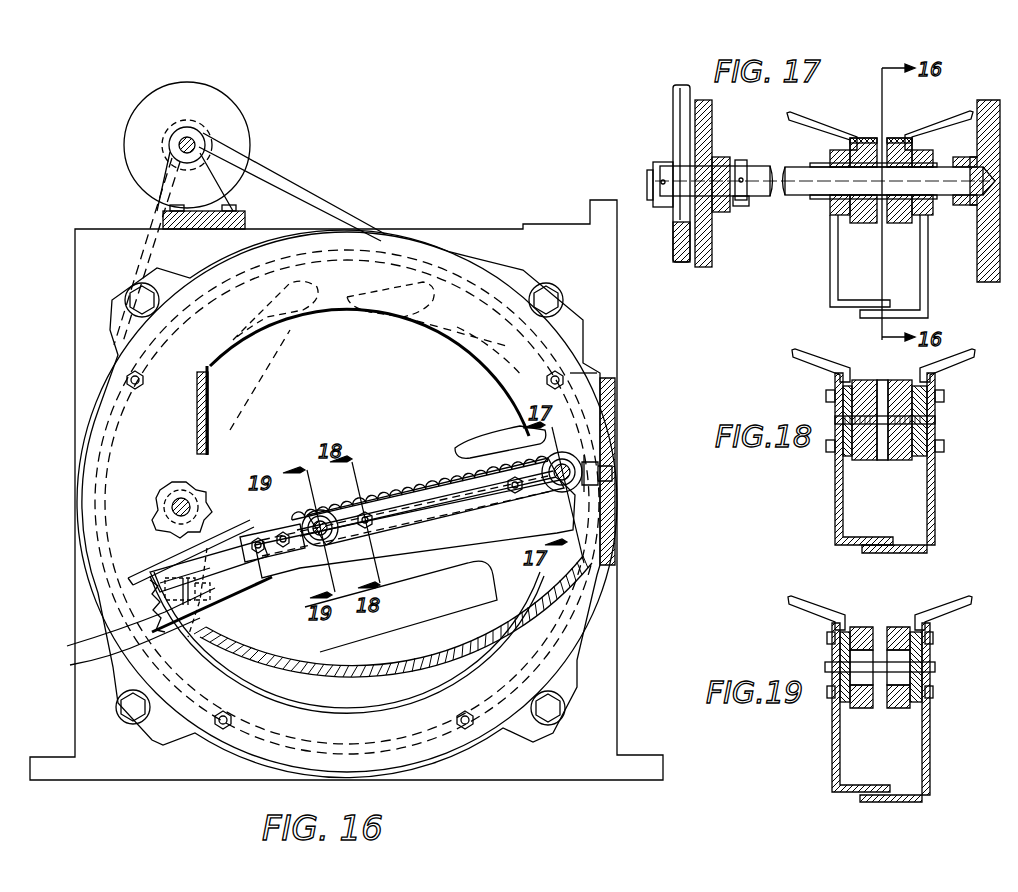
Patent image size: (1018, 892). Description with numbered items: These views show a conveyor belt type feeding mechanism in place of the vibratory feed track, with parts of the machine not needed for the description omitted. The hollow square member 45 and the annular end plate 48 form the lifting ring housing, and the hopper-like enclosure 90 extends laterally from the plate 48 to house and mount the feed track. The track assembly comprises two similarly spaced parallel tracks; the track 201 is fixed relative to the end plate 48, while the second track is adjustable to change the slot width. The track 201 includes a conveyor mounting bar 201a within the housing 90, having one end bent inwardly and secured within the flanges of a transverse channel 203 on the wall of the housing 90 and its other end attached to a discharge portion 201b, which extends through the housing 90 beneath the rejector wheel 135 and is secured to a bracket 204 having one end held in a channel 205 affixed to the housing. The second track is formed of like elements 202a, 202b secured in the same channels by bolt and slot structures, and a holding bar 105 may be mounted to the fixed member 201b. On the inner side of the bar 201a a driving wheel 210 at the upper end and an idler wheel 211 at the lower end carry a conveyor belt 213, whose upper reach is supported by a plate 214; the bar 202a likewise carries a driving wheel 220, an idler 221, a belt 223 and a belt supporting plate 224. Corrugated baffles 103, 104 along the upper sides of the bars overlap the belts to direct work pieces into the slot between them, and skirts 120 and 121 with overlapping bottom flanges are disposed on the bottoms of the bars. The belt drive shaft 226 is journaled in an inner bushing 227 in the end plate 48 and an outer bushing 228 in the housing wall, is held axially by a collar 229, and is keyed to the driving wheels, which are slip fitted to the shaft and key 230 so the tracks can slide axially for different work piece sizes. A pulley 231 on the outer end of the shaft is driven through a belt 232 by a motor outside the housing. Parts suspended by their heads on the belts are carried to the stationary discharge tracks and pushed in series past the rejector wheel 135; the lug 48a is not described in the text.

In FIG. 16, the hollow square member 45 is at (610, 333).
In FIG. 16, the annular end plate 48 is at (600, 373).
In FIG. 17, the annular end plate 48 is at (977, 272).
In FIG. 16, the housing lug 48a is at (500, 440).
In FIG. 16, the hopper-like enclosure 90 is at (612, 515).
In FIG. 17, the hopper-like enclosure 90 is at (712, 250).
In FIG. 16, the corrugated baffle 103 is at (445, 462).
In FIG. 17, the corrugated baffle 103 is at (920, 128).
In FIG. 18, the corrugated baffle 103 is at (958, 362).
In FIG. 17, the corrugated baffle 104 is at (832, 124).
In FIG. 18, the corrugated baffle 104 is at (792, 355).
In FIG. 16, the holding bar 105 is at (162, 565).
In FIG. 17, the skirt 120 is at (928, 314).
In FIG. 18, the skirt 120 is at (935, 514).
In FIG. 17, the skirt 121 is at (830, 278).
In FIG. 18, the skirt 121 is at (835, 514).
In FIG. 16, the kicker wheel 135 is at (173, 485).
In FIG. 16, the track 201 is at (252, 500).
In FIG. 16, the conveyor mounting bar 201a is at (465, 528).
In FIG. 17, the conveyor mounting bar 201a is at (920, 226).
In FIG. 18, the conveyor mounting bar 201a is at (920, 455).
In FIG. 19, the conveyor mounting bar 201a is at (922, 700).
In FIG. 16, the discharge portion 201b is at (117, 621).
In FIG. 17, the conveyor mounting bar 202a is at (838, 226).
In FIG. 18, the conveyor mounting bar 202a is at (845, 462).
In FIG. 19, the conveyor mounting bar 202a is at (843, 710).
In FIG. 16, the discharge portion 202b is at (111, 645).
In FIG. 16, the transverse channel 203 is at (605, 460).
In FIG. 16, the bracket 204 is at (140, 603).
In FIG. 16, the channel 205 is at (190, 622).
In FIG. 17, the driving wheel 210 is at (898, 226).
In FIG. 19, the idler wheel 211 is at (895, 710).
In FIG. 17, the conveyor belt 213 is at (904, 213).
In FIG. 18, the conveyor belt 213 is at (916, 462).
In FIG. 19, the conveyor belt 213 is at (892, 627).
In FIG. 16, the belt supporting plate 214 is at (415, 525).
In FIG. 18, the belt supporting plate 214 is at (882, 462).
In FIG. 17, the driving wheel 220 is at (860, 226).
In FIG. 19, the idler wheel 221 is at (858, 710).
In FIG. 17, the conveyor belt 223 is at (862, 213).
In FIG. 18, the conveyor belt 223 is at (864, 462).
In FIG. 19, the conveyor belt 223 is at (865, 627).
In FIG. 18, the belt supporting plate 224 is at (882, 462).
In FIG. 17, the belt drive shaft 226 is at (760, 168).
In FIG. 17, the inner bushing 227 is at (962, 160).
In FIG. 17, the outer bushing 228 is at (718, 158).
In FIG. 17, the collar 229 is at (745, 206).
In FIG. 17, the key 230 is at (812, 164).
In FIG. 17, the pulley 231 is at (660, 162).
In FIG. 17, the belt 232 is at (672, 98).